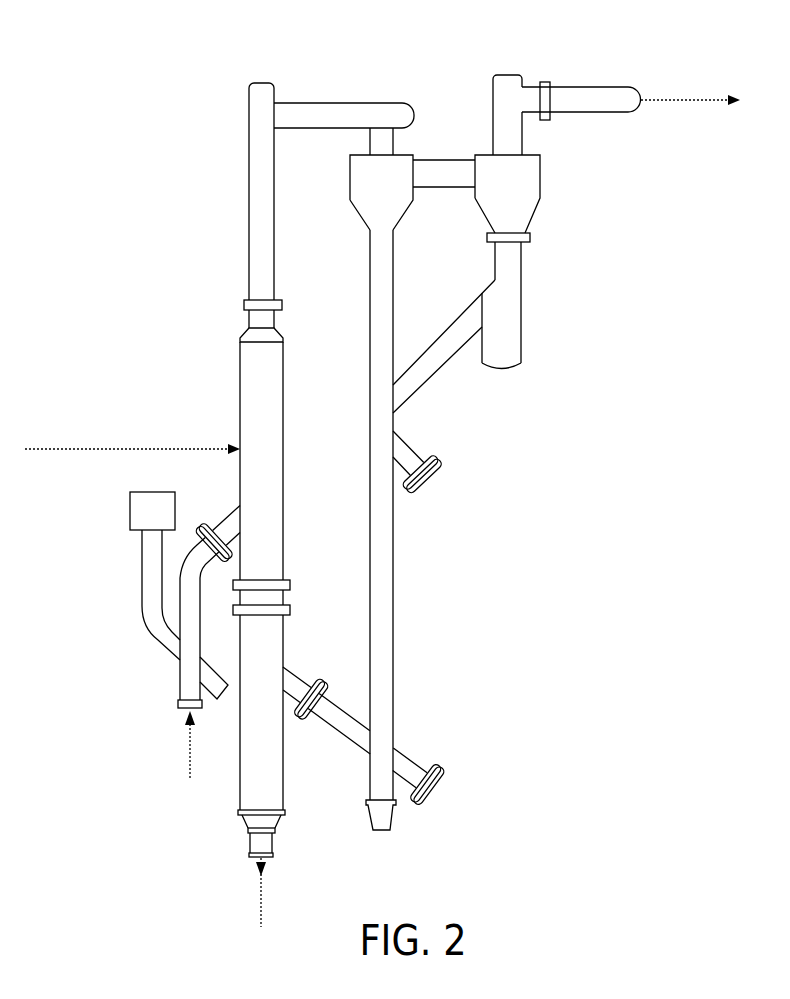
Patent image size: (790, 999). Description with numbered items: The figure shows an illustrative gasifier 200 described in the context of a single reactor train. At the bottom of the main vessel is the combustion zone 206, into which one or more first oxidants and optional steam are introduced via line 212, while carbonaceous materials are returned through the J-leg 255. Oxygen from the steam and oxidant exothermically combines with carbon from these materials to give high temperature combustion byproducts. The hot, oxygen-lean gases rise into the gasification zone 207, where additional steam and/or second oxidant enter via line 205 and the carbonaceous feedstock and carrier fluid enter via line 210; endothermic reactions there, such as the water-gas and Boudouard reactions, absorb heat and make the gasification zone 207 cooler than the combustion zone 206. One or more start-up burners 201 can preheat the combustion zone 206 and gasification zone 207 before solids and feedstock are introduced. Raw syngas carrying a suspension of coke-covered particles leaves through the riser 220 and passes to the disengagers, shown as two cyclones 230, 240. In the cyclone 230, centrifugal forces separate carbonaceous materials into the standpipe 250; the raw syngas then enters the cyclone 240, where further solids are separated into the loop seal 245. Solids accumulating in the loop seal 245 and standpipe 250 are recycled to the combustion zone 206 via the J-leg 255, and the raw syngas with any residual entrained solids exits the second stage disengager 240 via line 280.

The gasifier 200 is at (130, 104).
The start-up burner 201 is at (152, 513).
The line 205 is at (55, 445).
The combustion zone 206 is at (265, 635).
The gasification zone 207 is at (258, 405).
The line 210 is at (188, 765).
The line 212 is at (260, 908).
The riser 220 is at (262, 195).
The cyclone 230 is at (393, 200).
The cyclone 240 is at (540, 175).
The loop seal 245 is at (503, 372).
The standpipe 250 is at (393, 535).
The J-leg 255 is at (302, 713).
The line 280 is at (680, 100).